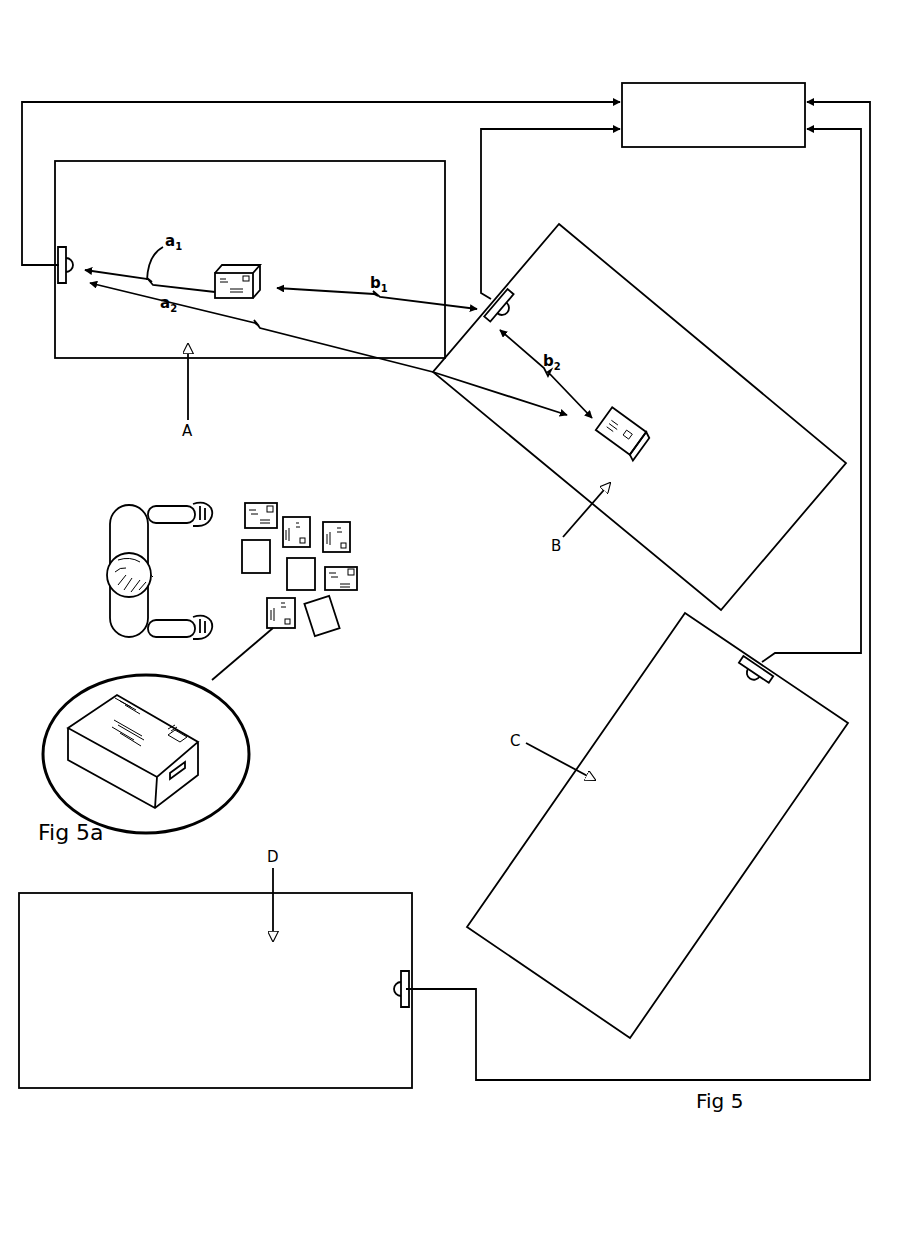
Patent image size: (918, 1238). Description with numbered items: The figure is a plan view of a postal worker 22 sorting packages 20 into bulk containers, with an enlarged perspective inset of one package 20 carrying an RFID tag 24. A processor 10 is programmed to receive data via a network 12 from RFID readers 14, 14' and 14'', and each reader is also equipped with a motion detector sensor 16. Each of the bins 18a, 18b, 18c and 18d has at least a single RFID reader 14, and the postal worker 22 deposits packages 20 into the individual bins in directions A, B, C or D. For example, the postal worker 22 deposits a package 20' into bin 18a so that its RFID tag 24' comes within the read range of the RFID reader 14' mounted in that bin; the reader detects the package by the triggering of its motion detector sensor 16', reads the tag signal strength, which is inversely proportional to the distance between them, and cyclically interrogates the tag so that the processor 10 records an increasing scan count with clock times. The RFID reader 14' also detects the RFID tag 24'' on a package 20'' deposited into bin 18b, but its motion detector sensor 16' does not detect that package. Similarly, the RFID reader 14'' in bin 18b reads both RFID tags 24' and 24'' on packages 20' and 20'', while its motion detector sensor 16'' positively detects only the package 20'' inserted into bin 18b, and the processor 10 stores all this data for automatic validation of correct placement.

In FIG. 5, the processor 10 is at (744, 76).
In FIG. 5, the network 12 is at (543, 98).
In FIG. 5, the RFID reader 14 is at (564, 831).
In FIG. 5, the motion detector sensor 16 is at (560, 858).
In FIG. 5, the RFID reader 14' is at (47, 292).
In FIG. 5, the motion detector sensor 16' is at (89, 242).
In FIG. 5, the RFID reader 14'' is at (487, 329).
In FIG. 5, the motion detector sensor 16'' is at (540, 310).
In FIG. 5, the bin 18a is at (323, 361).
In FIG. 5, the bin 18b is at (513, 440).
In FIG. 5, the bin 18c is at (620, 705).
In FIG. 5, the bin 18d is at (313, 893).
In FIG. 5, the package 20 is at (325, 569).
In FIG. 5A, the package 20 is at (144, 755).
In FIG. 5, the package 20' is at (265, 269).
In FIG. 5, the package 20'' is at (630, 453).
In FIG. 5, the postal worker 22 is at (122, 540).
In FIG. 5A, the RFID tag 24 is at (203, 754).
In FIG. 5, the RFID tag 24' is at (222, 254).
In FIG. 5, the RFID tag 24'' is at (666, 440).